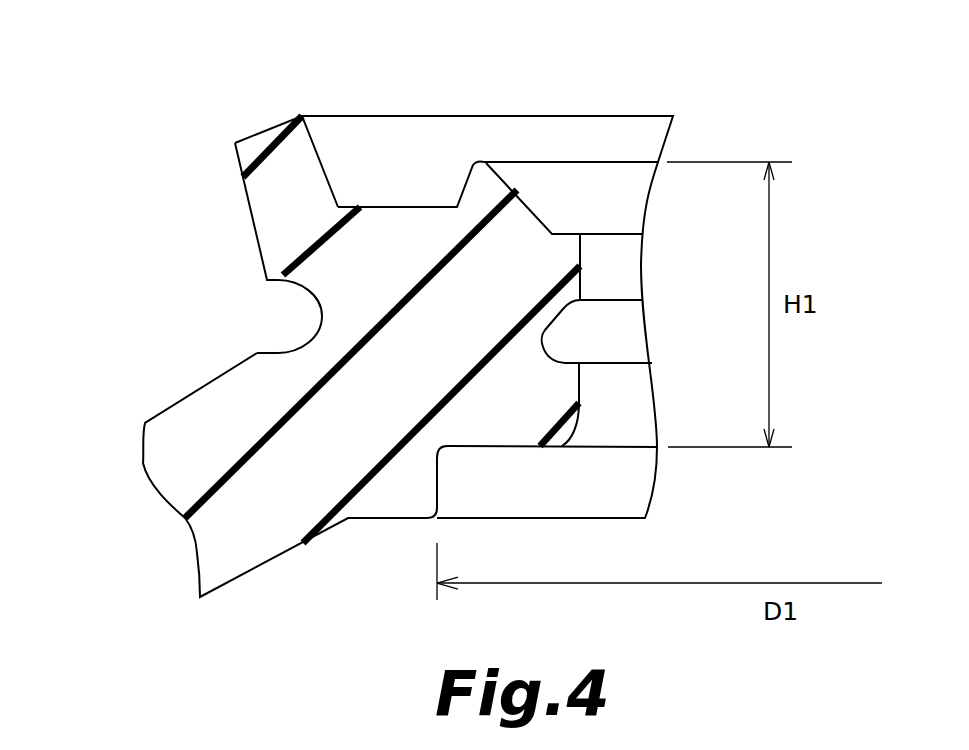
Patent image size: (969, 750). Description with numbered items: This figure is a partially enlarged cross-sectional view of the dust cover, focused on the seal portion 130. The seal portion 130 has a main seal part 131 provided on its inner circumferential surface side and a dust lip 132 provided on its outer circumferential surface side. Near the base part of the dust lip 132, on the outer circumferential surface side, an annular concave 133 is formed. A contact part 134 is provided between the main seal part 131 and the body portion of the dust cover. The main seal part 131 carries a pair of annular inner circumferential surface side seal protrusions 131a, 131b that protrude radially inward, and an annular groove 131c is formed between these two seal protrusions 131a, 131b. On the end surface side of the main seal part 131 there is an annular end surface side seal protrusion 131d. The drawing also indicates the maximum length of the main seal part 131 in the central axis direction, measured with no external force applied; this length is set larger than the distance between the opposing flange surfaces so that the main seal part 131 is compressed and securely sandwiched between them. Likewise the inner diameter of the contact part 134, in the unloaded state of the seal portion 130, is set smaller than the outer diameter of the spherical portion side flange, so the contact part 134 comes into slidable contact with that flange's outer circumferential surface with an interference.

The seal portion 130 is at (157, 218).
The main seal part 131 is at (720, 90).
The inner circumferential surface side seal protrusion 131a is at (567, 388).
The inner circumferential surface side seal protrusion 131b is at (568, 265).
The annular groove 131c is at (543, 348).
The end surface side seal protrusion 131d is at (484, 173).
The dust lip 132 is at (268, 140).
The annular concave 133 is at (322, 318).
The contact part 134 is at (455, 520).